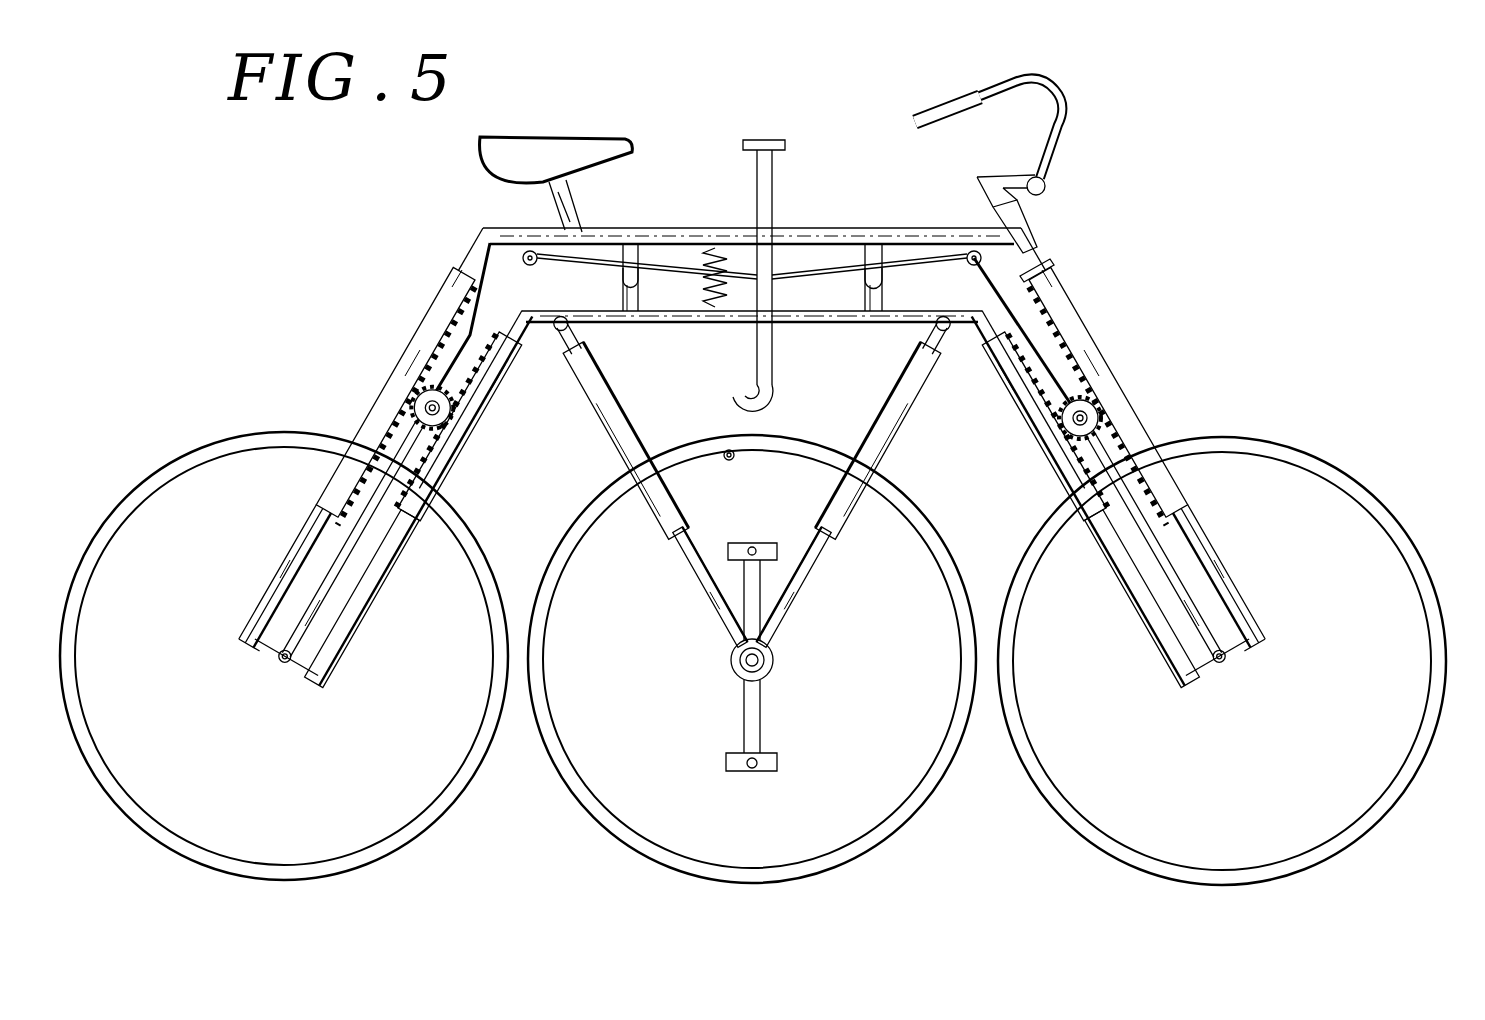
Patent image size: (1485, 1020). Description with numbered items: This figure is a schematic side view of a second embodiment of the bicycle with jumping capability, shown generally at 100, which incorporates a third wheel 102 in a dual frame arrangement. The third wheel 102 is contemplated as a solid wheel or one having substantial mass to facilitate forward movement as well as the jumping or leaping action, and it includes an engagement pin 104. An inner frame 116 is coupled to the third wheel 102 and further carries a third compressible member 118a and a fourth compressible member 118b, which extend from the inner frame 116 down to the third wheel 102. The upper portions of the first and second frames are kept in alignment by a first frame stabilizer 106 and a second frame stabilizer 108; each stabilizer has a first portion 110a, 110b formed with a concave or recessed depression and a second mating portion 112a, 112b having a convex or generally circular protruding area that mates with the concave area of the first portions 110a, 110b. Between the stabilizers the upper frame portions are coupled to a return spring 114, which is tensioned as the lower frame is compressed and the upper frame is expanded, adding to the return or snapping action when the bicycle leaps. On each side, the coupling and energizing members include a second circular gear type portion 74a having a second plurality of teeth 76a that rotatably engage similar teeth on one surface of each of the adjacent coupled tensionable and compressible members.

The bicycle with jumping capability 100 is at (1196, 84).
The third wheel 102 is at (590, 496).
The engagement pin 104 is at (729, 455).
The first frame stabilizer 106 is at (632, 246).
The second frame stabilizer 108 is at (875, 246).
The first portion 110a is at (634, 299).
The first portion 110b is at (886, 299).
The second mating portion 112a is at (620, 270).
The second mating portion 112b is at (882, 262).
The return spring 114 is at (707, 253).
The inner frame 116 is at (660, 323).
The third compressible member 118a is at (590, 394).
The fourth compressible member 118b is at (895, 396).
The second circular gear type portion 74a is at (1096, 408).
The second plurality of teeth 76a is at (1116, 429).